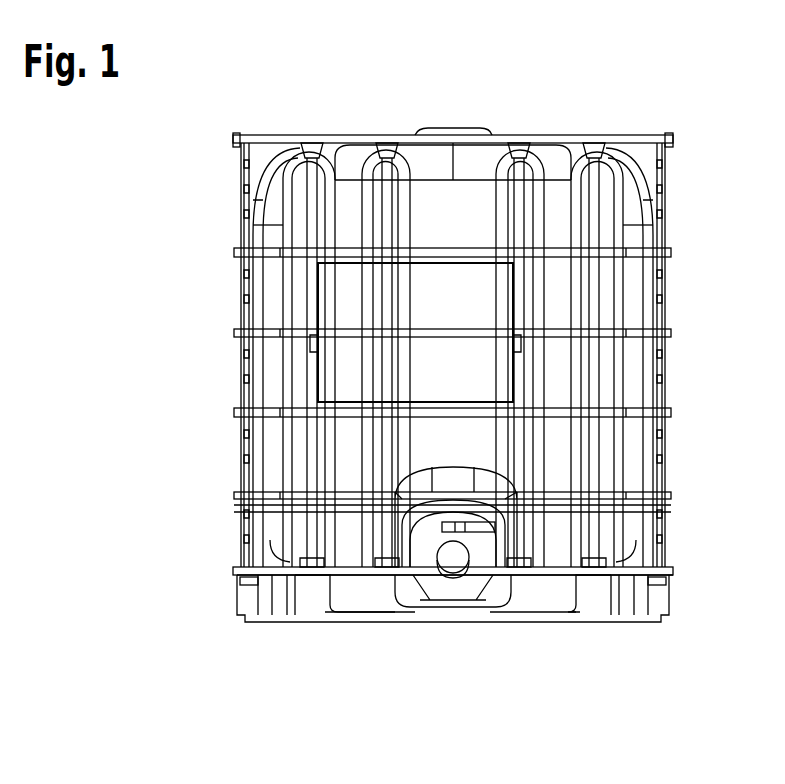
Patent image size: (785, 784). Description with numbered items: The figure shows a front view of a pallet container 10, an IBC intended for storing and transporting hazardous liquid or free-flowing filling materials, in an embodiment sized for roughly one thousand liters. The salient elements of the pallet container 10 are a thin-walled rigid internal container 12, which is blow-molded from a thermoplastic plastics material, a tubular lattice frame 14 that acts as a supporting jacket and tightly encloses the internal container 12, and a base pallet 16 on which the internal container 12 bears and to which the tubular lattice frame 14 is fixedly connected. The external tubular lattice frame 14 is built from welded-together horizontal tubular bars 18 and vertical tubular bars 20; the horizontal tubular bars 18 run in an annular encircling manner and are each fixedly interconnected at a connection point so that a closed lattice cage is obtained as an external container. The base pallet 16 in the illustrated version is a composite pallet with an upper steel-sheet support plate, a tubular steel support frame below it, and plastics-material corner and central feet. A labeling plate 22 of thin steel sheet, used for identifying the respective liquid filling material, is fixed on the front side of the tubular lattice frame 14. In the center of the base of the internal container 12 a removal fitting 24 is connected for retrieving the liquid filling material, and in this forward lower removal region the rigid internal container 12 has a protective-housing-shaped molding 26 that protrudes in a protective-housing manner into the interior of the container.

The pallet container 10 is at (624, 84).
The internal container 12 is at (632, 211).
The tubular lattice frame 14 is at (600, 328).
The base pallet 16 is at (643, 602).
The horizontal tubular bars 18 is at (260, 337).
The vertical tubular bars 20 is at (312, 210).
The labeling plate 22 is at (365, 307).
The removal fitting 24 is at (453, 563).
The protective-housing-shaped molding 26 is at (497, 547).